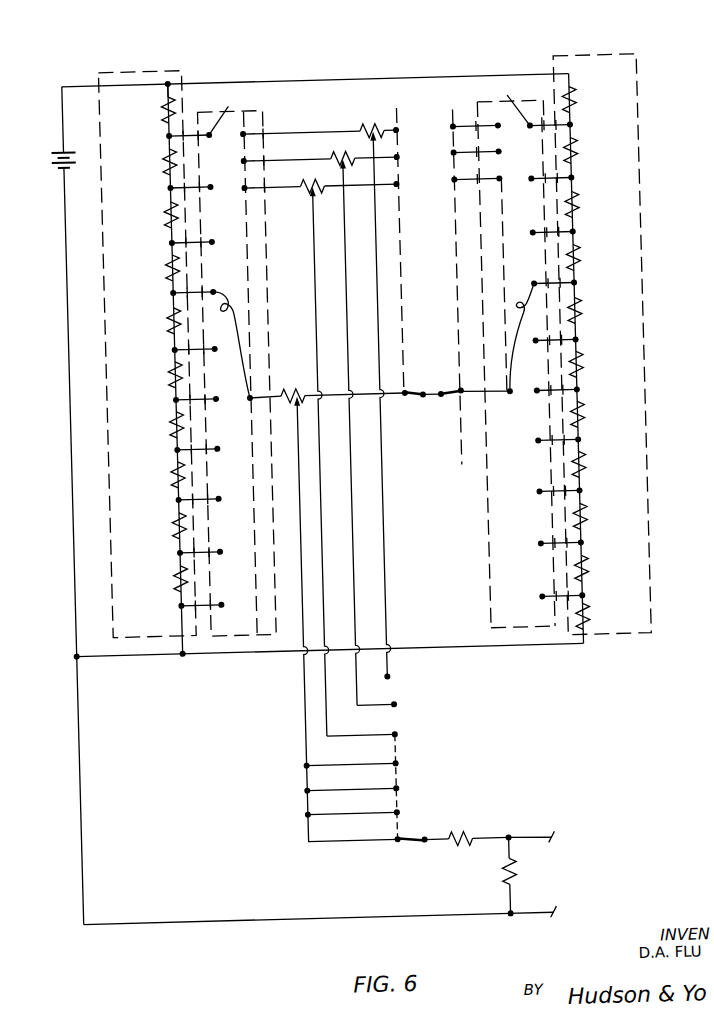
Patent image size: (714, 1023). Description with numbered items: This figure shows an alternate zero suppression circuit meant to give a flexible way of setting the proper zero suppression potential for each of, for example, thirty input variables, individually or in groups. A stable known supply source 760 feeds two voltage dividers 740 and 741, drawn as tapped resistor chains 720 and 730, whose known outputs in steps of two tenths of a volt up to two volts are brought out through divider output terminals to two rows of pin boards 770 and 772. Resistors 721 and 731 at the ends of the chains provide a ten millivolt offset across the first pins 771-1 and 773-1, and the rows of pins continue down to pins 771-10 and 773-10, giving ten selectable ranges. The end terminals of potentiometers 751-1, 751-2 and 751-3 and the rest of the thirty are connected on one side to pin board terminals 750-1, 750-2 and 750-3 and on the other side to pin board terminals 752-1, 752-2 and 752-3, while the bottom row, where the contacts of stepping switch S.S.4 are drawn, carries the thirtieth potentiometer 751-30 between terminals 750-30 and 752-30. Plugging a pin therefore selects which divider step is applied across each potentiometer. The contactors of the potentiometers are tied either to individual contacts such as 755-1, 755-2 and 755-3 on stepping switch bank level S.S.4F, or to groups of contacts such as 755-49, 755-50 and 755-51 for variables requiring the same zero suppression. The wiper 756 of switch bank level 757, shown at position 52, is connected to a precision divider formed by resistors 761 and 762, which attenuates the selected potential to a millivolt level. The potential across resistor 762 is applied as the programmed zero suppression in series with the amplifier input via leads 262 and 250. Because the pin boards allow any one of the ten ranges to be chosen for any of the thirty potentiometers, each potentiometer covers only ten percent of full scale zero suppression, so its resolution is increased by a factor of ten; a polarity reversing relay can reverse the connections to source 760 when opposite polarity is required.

The supply source 760 is at (68, 146).
The voltage divider 740 is at (168, 66).
The voltage divider 741 is at (627, 63).
The pin board 770 is at (256, 85).
The pin board 772 is at (535, 97).
The tapped resistor 720 is at (175, 158).
The resistor 721 is at (186, 89).
The tapped resistor 730 is at (582, 150).
The resistor 731 is at (585, 622).
The pin 771-1 is at (237, 105).
The switch contact 771-10 is at (217, 604).
The pin 773-1 is at (517, 96).
The switch contact 773-10 is at (537, 604).
The pin board terminal 750-1 is at (250, 134).
The pin board terminal 750-2 is at (250, 161).
The pin board terminal 750-3 is at (250, 188).
The potentiometer 751-1 is at (392, 134).
The potentiometer 751-2 is at (342, 147).
The potentiometer 751-3 is at (308, 193).
The pin board terminal 752-1 is at (403, 134).
The pin board terminal 752-2 is at (403, 161).
The pin board terminal 752-3 is at (402, 188).
The pin board terminal 750-30 is at (251, 400).
The potentiometer 751-30 is at (285, 406).
The pin board terminal 752-30 is at (407, 401).
The stepping switch S.S.4 is at (421, 403).
The individual contact 755-1 is at (382, 681).
The output lead 755-2 is at (388, 707).
The output lead 755-3 is at (388, 737).
The switch bank level 757 is at (391, 752).
The group contact 755-49 is at (388, 766).
The group contact 755-50 is at (388, 791).
The group contact 755-51 is at (388, 815).
The stepping switch bank level S.S.4F is at (392, 844).
The switch position 52 is at (397, 854).
The precision divider resistor 761 is at (460, 844).
The wiper 756 is at (414, 849).
The precision divider resistor 762 is at (504, 882).
The lead 262 is at (549, 830).
The lead 250 is at (541, 915).